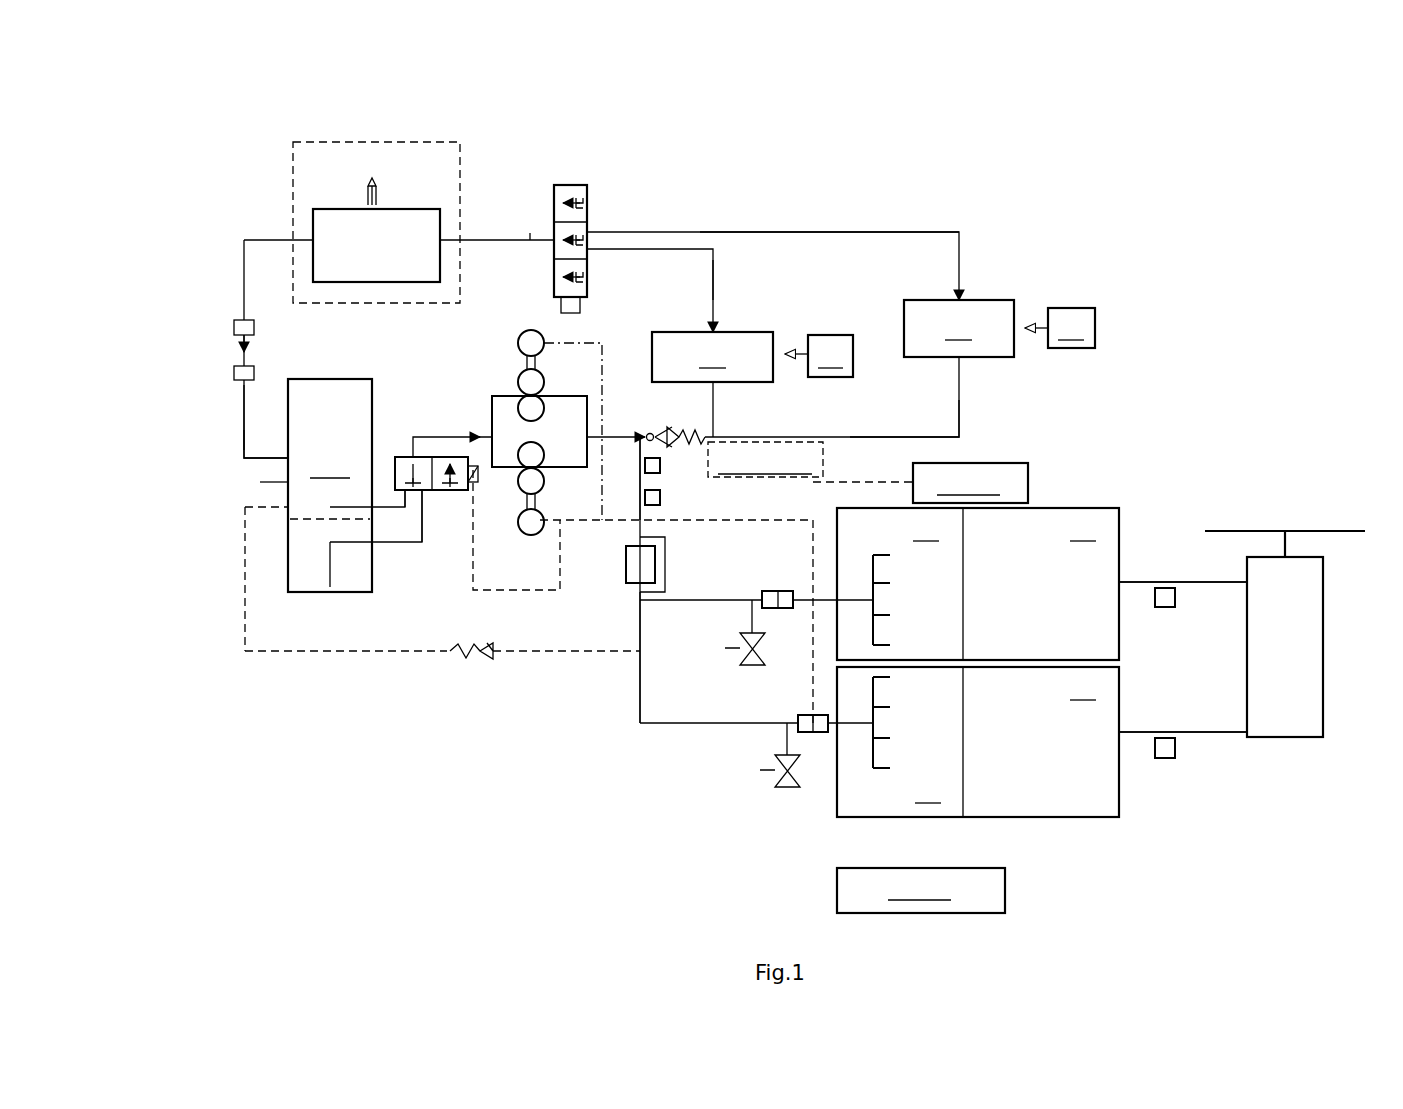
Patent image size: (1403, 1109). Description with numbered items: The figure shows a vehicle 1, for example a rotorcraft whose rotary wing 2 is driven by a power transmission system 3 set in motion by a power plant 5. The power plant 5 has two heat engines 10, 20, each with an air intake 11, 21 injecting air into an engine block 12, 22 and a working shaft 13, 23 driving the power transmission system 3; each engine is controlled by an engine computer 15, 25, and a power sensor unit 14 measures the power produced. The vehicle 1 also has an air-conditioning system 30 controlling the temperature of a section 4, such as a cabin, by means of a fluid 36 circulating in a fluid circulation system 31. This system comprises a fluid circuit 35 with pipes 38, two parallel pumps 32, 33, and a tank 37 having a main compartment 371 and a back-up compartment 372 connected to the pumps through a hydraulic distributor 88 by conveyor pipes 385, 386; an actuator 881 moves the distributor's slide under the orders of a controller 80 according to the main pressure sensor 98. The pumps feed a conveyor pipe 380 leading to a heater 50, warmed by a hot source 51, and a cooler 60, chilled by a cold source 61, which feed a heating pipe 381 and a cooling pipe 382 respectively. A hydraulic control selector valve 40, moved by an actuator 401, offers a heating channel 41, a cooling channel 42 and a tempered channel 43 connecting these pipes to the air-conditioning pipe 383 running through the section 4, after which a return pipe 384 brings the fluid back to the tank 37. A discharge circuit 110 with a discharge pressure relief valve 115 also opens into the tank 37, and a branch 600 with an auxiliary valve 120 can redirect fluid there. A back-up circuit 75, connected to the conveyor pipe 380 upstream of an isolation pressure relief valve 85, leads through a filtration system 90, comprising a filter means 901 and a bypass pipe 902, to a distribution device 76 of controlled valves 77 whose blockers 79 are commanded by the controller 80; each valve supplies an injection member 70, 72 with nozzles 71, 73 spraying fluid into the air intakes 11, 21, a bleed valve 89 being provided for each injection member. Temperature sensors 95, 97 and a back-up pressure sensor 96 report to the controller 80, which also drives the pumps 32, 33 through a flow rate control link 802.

The vehicle 1 is at (315, 865).
The rotary wing 2 is at (1335, 503).
The power transmission system 3 is at (1310, 767).
The section 4 is at (293, 175).
The power plant 5 is at (1240, 855).
The heat engine 10 is at (1034, 552).
The air intake 11 is at (938, 584).
The engine block 12 is at (1083, 530).
The working shaft 13 is at (1198, 582).
The power sensor unit 14 is at (1175, 597).
The engine computer 15 is at (970, 483).
The heat engine 20 is at (1001, 784).
The air intake 21 is at (939, 742).
The engine block 22 is at (1083, 689).
The working shaft 23 is at (1220, 732).
The engine computer 25 is at (921, 890).
The air-conditioning system 30 is at (345, 650).
The fluid circulation system 31 is at (415, 633).
The pump 32 is at (530, 535).
The pump 33 is at (518, 343).
The fluid circuit 35 is at (210, 557).
The fluid 36 is at (330, 565).
The tank 37 is at (288, 482).
The pipes 38 is at (244, 380).
The hydraulic control selector valve 40 is at (577, 190).
The heating channel 41 is at (587, 272).
The cooling channel 42 is at (587, 205).
The tempered channel 43 is at (587, 185).
The heater 50 is at (712, 357).
The hot source 51 is at (819, 356).
The cooler 60 is at (959, 328).
The cold source 61 is at (1060, 328).
The injection member 70 is at (903, 637).
The nozzle 71 is at (895, 583).
The injection member 72 is at (865, 790).
The nozzle 73 is at (903, 680).
The back-up circuit 75 is at (630, 760).
The distribution device 76 is at (772, 591).
The controlled valve 77 is at (808, 713).
The blocker 79 is at (780, 608).
The controller 80 is at (765, 459).
The isolation pressure relief valve 85 is at (672, 430).
The hydraulic distributor 88 is at (437, 462).
The bleed valve 89 is at (730, 660).
The filtration system 90 is at (615, 612).
The temperature sensor 95 is at (660, 497).
The back-up pressure sensor 96 is at (660, 465).
The temperature sensor 97 is at (234, 327).
The main pressure sensor 98 is at (255, 372).
The discharge circuit 110 is at (530, 651).
The discharge pressure relief valve 115 is at (465, 678).
The auxiliary valve 120 is at (648, 434).
The main compartment 371 is at (330, 467).
The back-up compartment 372 is at (333, 582).
The conveyor pipe 380 is at (870, 437).
The heating pipe 381 is at (713, 262).
The cooling pipe 382 is at (959, 233).
The air-conditioning pipe 383 is at (530, 233).
The return pipe 384 is at (244, 430).
The conveyor pipe 385 is at (402, 540).
The conveyor pipe 386 is at (428, 560).
The actuator 401 is at (561, 308).
The branch 600 is at (635, 447).
The flow rate control link 802 is at (602, 345).
The actuator 881 is at (472, 466).
The filter means 901 is at (633, 565).
The bypass pipe 902 is at (690, 600).